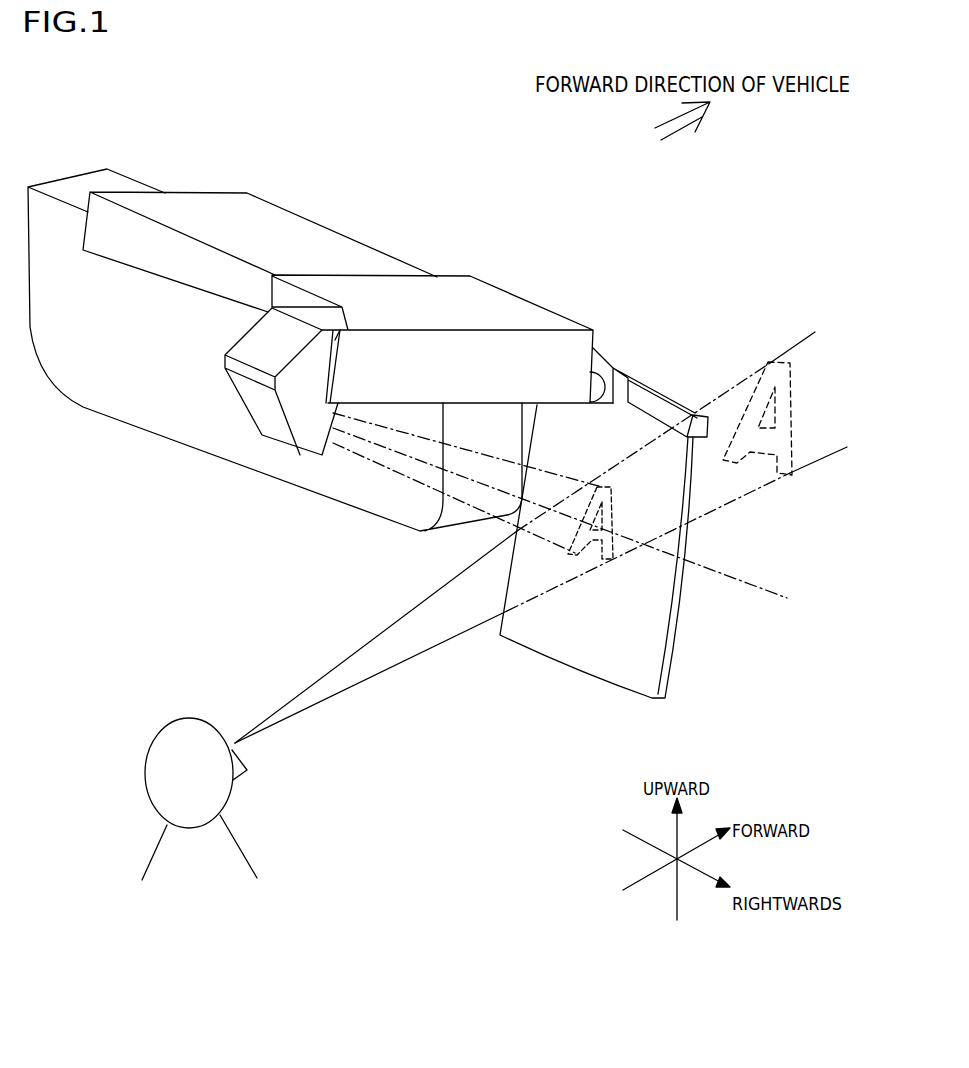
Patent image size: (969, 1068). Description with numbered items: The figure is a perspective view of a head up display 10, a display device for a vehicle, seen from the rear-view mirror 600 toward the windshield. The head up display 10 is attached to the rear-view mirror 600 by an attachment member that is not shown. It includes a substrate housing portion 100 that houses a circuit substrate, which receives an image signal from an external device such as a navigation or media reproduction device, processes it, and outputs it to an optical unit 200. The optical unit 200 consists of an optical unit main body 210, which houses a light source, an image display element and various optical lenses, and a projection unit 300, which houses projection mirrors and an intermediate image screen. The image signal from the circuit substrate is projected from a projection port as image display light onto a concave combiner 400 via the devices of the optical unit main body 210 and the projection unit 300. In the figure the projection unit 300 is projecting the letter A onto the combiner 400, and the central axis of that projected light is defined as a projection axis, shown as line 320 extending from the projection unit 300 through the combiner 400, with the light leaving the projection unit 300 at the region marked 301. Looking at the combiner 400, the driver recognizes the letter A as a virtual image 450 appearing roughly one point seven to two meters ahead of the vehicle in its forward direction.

The head up display 10 is at (384, 109).
The substrate housing portion 100 is at (277, 222).
The optical unit 200 is at (536, 252).
The optical unit main body 210 is at (538, 320).
The projection unit 300 is at (303, 413).
The light emitting portion 301 is at (339, 438).
The optical axis 320 is at (730, 577).
The combiner 400 is at (580, 632).
The virtual image 450 is at (790, 385).
The rear-view mirror 600 is at (148, 415).